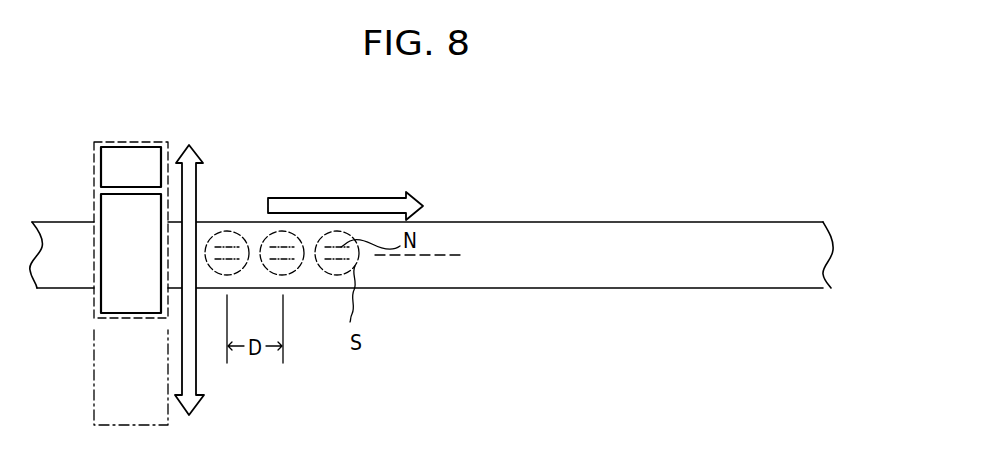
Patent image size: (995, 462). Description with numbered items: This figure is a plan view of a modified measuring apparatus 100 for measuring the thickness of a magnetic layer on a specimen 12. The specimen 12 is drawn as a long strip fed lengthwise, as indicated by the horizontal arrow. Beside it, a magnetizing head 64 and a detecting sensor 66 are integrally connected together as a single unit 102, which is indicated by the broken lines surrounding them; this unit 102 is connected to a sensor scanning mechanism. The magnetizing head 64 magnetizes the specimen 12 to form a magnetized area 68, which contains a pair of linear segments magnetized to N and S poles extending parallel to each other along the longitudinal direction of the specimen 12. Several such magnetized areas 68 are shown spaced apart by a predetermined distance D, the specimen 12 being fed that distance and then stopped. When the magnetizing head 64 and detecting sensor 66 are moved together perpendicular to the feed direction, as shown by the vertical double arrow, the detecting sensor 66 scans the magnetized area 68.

The specimen 12 is at (747, 281).
The magnetizing head 64 is at (132, 303).
The detecting sensor 66 is at (133, 157).
The magnetized area 68 is at (245, 236).
The modified measuring apparatus 100 is at (598, 99).
The unit 102 is at (163, 141).